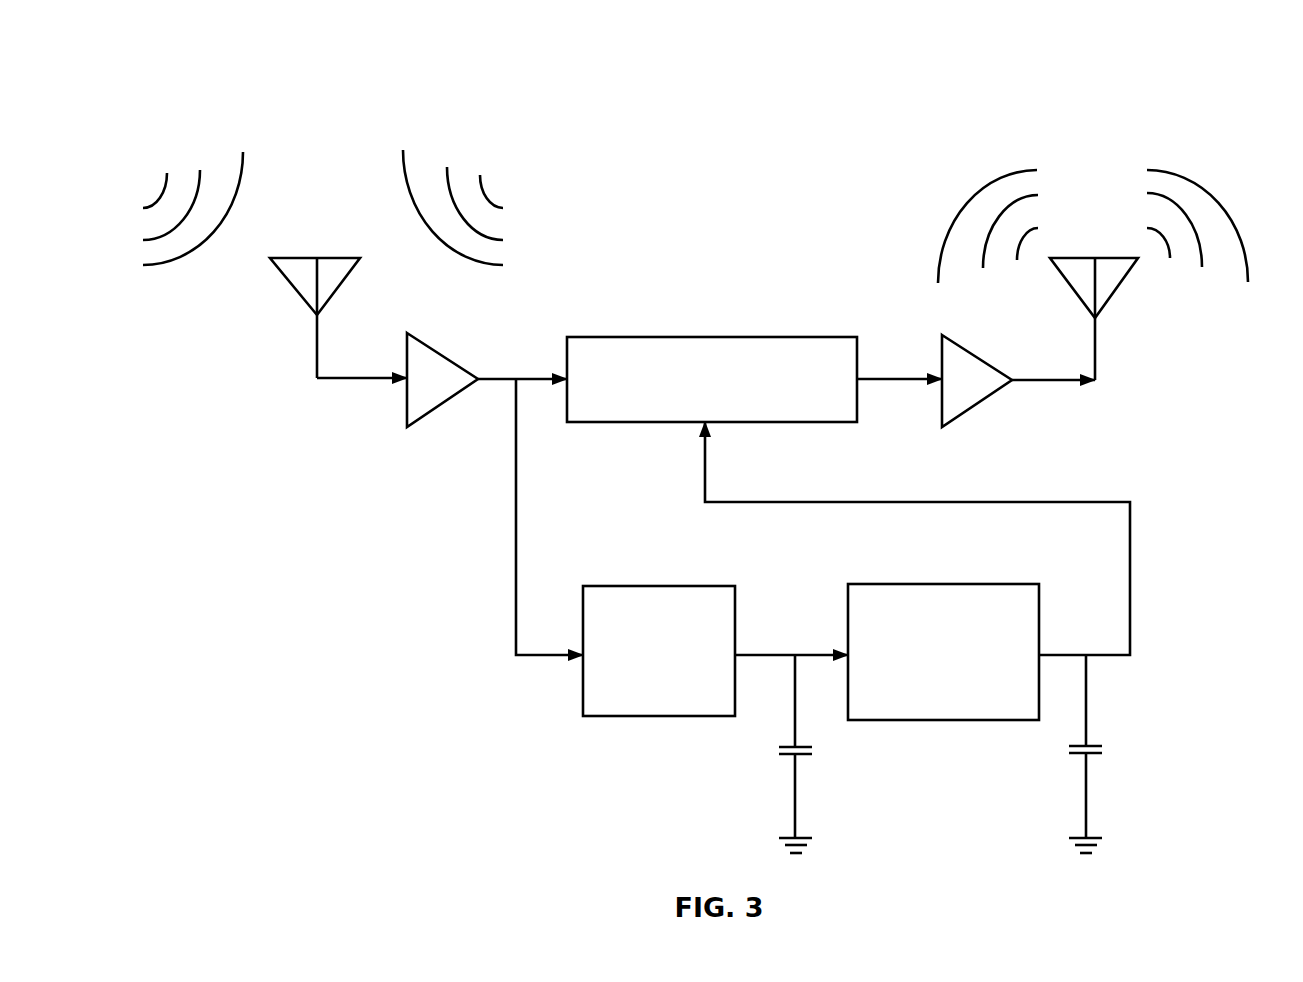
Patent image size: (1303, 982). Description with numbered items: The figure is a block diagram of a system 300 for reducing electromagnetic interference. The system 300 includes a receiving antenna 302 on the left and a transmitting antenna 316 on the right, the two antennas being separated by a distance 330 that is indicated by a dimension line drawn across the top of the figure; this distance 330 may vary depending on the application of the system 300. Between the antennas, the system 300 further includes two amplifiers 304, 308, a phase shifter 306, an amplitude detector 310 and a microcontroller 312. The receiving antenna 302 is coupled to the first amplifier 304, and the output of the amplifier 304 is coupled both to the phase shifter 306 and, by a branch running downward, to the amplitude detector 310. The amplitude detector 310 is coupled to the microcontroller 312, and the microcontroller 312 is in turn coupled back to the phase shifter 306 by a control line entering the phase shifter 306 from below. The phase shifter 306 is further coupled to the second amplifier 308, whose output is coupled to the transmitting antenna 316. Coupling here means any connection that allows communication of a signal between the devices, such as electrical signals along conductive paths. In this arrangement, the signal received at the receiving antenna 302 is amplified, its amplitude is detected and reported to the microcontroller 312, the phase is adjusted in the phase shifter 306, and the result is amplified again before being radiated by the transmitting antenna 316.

The system 300 is at (310, 690).
The receiving antenna 302 is at (302, 300).
The amplifier 304 is at (487, 380).
The phase shifter 306 is at (754, 379).
The amplifier 308 is at (1018, 381).
The amplitude detector 310 is at (682, 616).
The microcontroller 312 is at (917, 637).
The transmitting antenna 316 is at (1120, 287).
The distance 330 is at (316, 35).